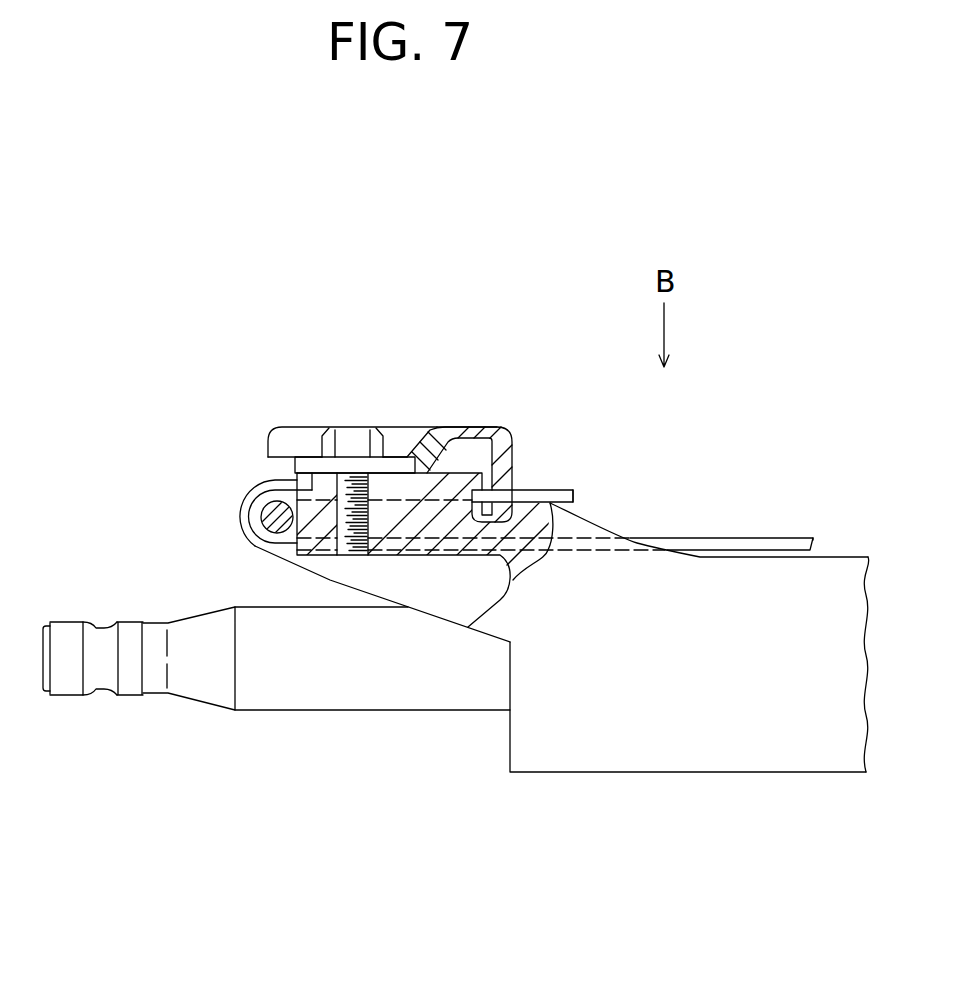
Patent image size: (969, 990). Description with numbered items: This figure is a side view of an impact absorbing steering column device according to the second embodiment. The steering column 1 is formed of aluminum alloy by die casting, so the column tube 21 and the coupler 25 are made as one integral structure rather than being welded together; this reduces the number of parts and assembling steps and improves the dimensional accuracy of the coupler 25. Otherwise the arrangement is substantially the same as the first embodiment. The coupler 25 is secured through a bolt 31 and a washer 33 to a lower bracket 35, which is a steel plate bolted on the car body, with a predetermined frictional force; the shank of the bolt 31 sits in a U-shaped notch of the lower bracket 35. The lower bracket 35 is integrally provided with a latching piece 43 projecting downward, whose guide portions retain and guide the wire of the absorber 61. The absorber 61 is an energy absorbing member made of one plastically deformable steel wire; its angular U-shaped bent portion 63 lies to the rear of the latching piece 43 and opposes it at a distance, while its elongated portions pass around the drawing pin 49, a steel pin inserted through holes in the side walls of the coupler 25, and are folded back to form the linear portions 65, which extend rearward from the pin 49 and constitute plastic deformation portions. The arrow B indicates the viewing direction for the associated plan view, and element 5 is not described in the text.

The steering column 1 is at (823, 459).
The stud bolt 5 is at (318, 700).
The column tube 21 is at (641, 753).
The coupler 25 is at (328, 578).
The bolt 31 is at (349, 440).
The washer 33 is at (307, 465).
The lower bracket 35 is at (453, 410).
The latching piece 43 is at (510, 455).
The drawing pin 49 is at (263, 514).
The absorber 61 is at (565, 478).
The angular U-shaped bent portion 63 is at (573, 497).
The linear portions 65 is at (732, 540).